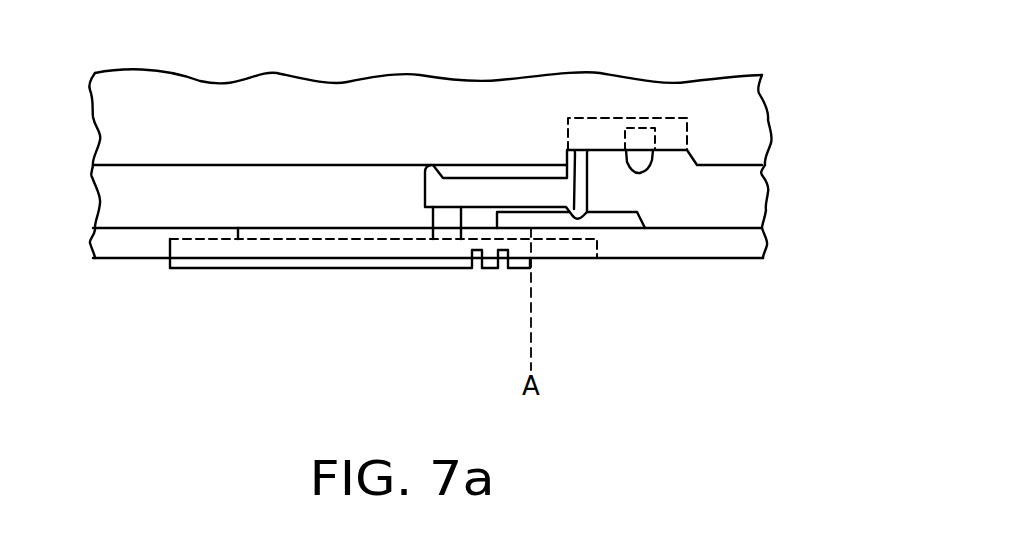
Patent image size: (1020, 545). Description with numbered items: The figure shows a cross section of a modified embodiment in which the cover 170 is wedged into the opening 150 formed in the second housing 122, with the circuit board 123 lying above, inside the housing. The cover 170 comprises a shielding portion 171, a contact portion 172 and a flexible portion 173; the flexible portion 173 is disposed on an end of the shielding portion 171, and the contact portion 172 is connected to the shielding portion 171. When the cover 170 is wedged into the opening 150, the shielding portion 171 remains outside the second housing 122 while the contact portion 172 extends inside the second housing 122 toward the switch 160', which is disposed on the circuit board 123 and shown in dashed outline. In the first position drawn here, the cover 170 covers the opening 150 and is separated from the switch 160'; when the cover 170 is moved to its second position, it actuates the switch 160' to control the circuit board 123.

The circuit board 123 is at (278, 88).
The second housing 122 is at (130, 250).
The switch 160' is at (627, 90).
The opening 150 is at (257, 239).
The cover 170 is at (481, 265).
The shielding portion 171 is at (345, 263).
The contact portion 172 is at (452, 195).
The flexible portion 173 is at (546, 272).